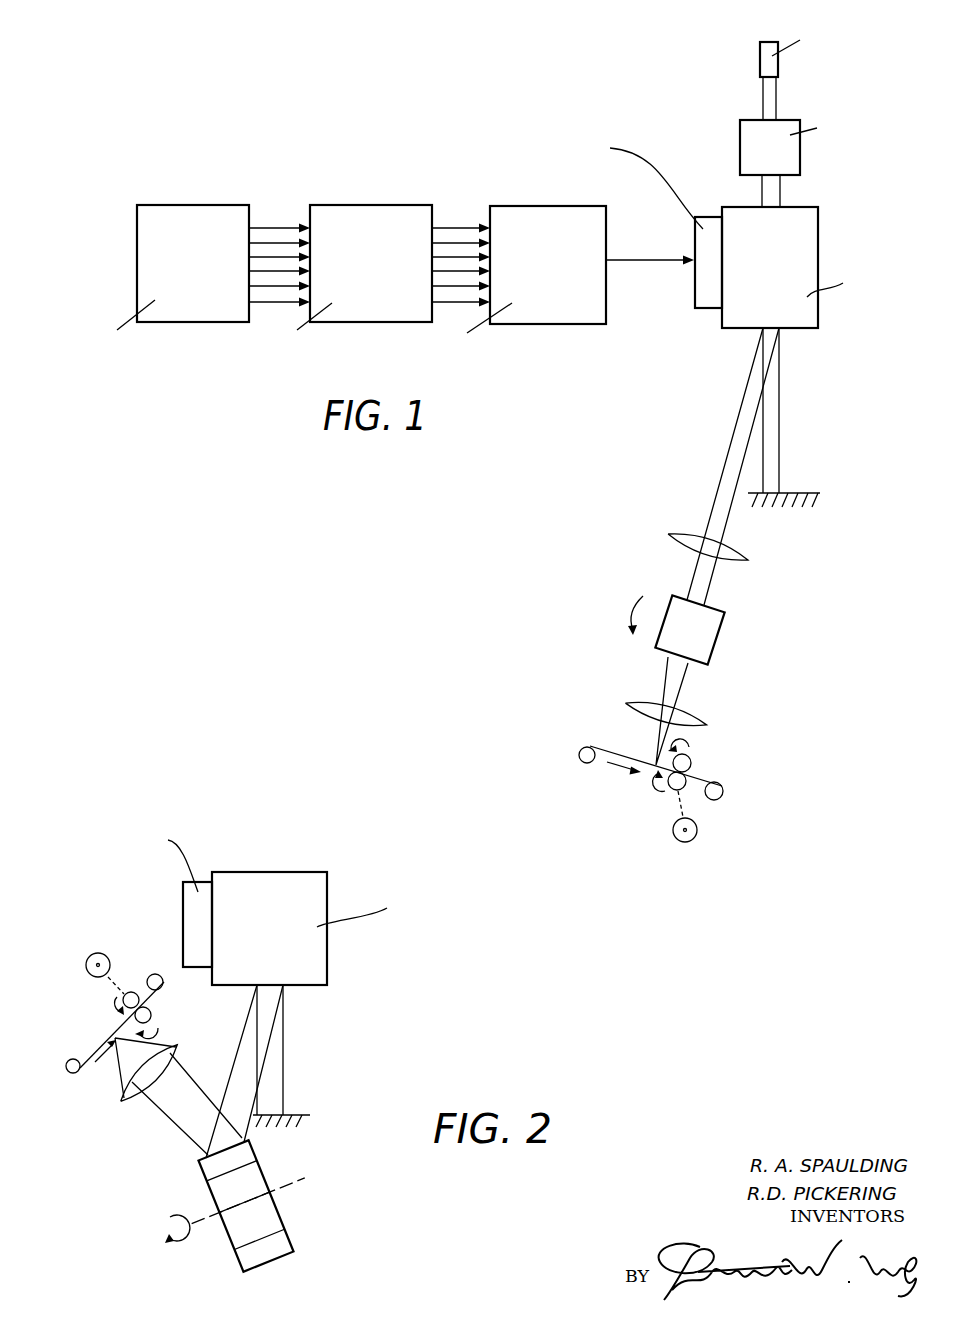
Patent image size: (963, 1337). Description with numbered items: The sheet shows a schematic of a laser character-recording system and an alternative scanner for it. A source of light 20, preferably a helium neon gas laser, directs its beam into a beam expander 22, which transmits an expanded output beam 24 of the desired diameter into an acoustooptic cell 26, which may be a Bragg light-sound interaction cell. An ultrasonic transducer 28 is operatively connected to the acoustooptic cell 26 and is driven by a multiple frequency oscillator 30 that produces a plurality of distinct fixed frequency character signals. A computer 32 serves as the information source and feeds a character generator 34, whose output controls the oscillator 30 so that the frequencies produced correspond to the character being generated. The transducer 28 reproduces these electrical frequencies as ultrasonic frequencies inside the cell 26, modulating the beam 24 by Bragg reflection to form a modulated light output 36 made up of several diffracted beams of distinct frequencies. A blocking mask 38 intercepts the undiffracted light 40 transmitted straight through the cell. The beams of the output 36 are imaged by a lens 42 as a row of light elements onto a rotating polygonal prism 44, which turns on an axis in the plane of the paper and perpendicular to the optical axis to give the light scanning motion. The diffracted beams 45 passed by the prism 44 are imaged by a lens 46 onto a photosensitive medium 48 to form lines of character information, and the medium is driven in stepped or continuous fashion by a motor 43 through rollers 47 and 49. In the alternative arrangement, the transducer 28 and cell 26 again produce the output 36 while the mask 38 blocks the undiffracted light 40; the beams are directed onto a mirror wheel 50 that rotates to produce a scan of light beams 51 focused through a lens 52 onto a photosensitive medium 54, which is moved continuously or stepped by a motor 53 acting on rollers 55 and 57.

In FIG. 1, the source of light 20 is at (760, 61).
In FIG. 1, the beam expander 22 is at (740, 132).
In FIG. 1, the output beam 24 is at (762, 184).
In FIG. 1, the acoustooptic cell 26 is at (819, 219).
In FIG. 2, the acoustooptic cell 26 is at (280, 872).
In FIG. 1, the ultrasonic transducer 28 is at (709, 217).
In FIG. 2, the ultrasonic transducer 28 is at (183, 886).
In FIG. 1, the multiple frequency oscillator 30 is at (567, 206).
In FIG. 1, the computer 32 is at (187, 205).
In FIG. 1, the character generator 34 is at (384, 205).
In FIG. 1, the modulated light output 36 is at (733, 437).
In FIG. 2, the modulated light output 36 is at (236, 1064).
In FIG. 1, the blocking mask 38 is at (800, 493).
In FIG. 2, the blocking mask 38 is at (304, 1114).
In FIG. 1, the undiffracted light 40 is at (780, 439).
In FIG. 2, the undiffracted light 40 is at (285, 1058).
In FIG. 1, the lens 42 is at (680, 533).
In FIG. 1, the motor 43 is at (676, 835).
In FIG. 1, the rotating polygonal prism 44 is at (721, 638).
In FIG. 1, the diffracted beams 45 is at (682, 683).
In FIG. 1, the lens 46 is at (703, 720).
In FIG. 1, the roller 47 is at (686, 782).
In FIG. 1, the photosensitive medium 48 is at (714, 781).
In FIG. 1, the roller 49 is at (692, 762).
In FIG. 2, the mirror wheel 50 is at (270, 1218).
In FIG. 2, the scan of light beams 51 is at (182, 1118).
In FIG. 2, the lens 52 is at (178, 1045).
In FIG. 2, the motor 53 is at (106, 955).
In FIG. 2, the photosensitive medium 54 is at (120, 1027).
In FIG. 2, the roller 55 is at (135, 992).
In FIG. 2, the roller 57 is at (152, 1015).